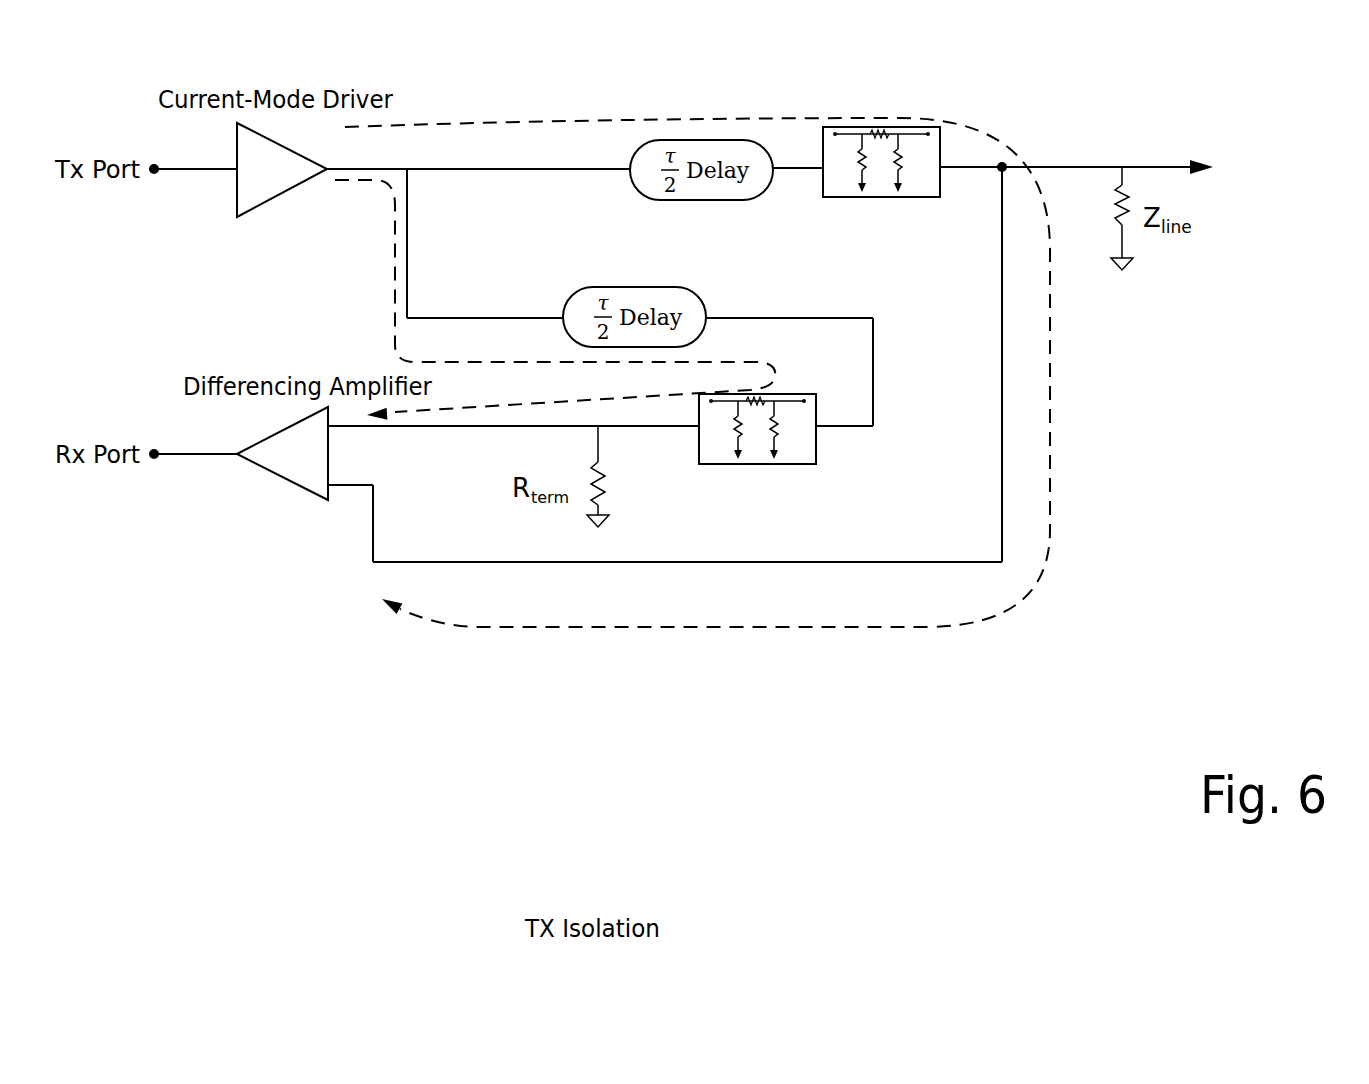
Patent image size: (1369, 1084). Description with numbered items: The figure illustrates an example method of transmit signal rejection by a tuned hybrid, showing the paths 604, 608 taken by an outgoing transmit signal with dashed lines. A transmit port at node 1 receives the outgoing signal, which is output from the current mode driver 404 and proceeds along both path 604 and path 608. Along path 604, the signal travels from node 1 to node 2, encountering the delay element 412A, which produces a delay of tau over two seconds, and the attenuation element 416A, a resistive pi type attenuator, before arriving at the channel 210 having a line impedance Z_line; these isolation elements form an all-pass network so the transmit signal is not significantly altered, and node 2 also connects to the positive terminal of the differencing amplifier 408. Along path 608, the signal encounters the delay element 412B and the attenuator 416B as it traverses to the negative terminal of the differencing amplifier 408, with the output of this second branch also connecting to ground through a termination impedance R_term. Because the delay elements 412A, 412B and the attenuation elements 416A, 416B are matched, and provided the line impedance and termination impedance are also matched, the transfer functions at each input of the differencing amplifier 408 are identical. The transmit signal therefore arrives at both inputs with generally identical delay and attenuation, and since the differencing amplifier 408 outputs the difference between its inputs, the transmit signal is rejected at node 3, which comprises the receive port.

The node 1 is at (152, 166).
The node 2 is at (1005, 164).
The node 3 is at (152, 450).
The channel 210 is at (1153, 165).
The current output amplifier 404 is at (258, 203).
The differencing low-noise amplifier 408 is at (258, 468).
The delay element 412A is at (640, 203).
The delay element 412B is at (700, 285).
The attenuation element 416A is at (872, 200).
The attenuation element 416B is at (765, 466).
The path 604 is at (675, 121).
The path 608 is at (390, 292).